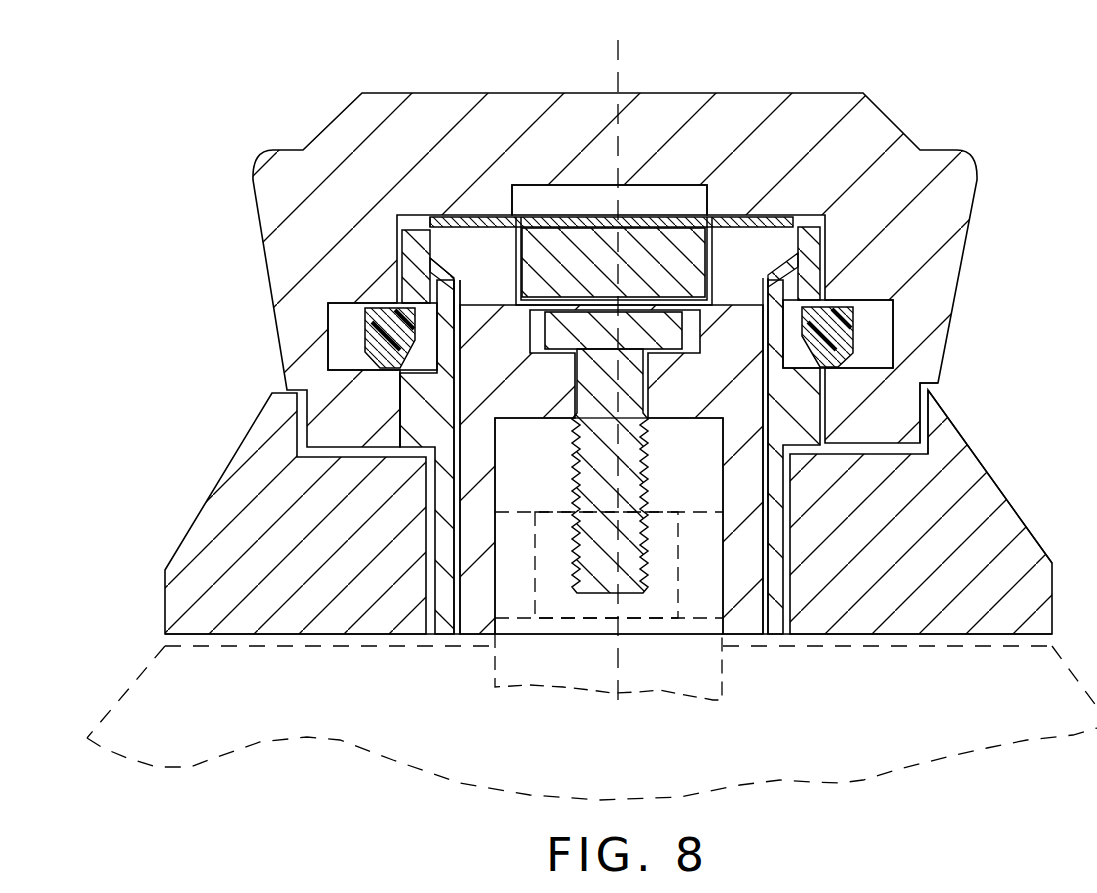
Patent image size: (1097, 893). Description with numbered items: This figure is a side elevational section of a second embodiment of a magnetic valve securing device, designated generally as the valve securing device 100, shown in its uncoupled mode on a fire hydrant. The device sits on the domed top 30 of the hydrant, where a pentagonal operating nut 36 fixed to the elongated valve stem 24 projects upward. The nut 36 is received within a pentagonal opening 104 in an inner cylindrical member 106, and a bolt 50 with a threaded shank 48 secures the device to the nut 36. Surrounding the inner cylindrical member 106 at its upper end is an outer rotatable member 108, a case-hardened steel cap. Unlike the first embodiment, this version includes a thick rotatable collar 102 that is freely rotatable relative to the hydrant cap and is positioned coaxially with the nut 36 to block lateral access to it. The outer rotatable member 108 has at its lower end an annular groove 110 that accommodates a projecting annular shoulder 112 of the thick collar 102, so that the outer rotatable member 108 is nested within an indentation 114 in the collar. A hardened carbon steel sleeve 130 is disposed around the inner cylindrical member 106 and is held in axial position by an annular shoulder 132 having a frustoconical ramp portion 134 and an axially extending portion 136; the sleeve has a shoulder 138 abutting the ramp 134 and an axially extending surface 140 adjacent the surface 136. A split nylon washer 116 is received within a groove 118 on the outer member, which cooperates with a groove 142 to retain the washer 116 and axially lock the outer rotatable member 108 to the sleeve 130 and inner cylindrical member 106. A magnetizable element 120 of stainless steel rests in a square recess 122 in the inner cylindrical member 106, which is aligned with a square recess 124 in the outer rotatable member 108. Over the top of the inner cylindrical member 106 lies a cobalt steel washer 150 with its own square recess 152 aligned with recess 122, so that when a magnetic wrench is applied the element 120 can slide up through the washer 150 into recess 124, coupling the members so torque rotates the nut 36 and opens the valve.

The valve securing device 100 is at (757, 82).
The thick rotatable collar 102 is at (987, 497).
The pentagonal opening 104 is at (712, 483).
The inner cylindrical member 106 is at (545, 405).
The outer rotatable member 108 is at (272, 198).
The annular groove 110 is at (930, 400).
The projecting annular shoulder 112 is at (957, 433).
The indentation 114 is at (938, 388).
The split nylon washer 116 is at (372, 345).
The groove 118 is at (337, 313).
The magnetizable element 120 is at (583, 240).
The square recess 122 is at (725, 225).
The square recess 124 is at (672, 195).
The hardened carbon steel sleeve 130 is at (440, 640).
The annular shoulder 132 is at (437, 217).
The frustoconical ramp portion 134 is at (447, 267).
The axially extending portion 136 is at (418, 232).
The shoulder 138 is at (457, 283).
The axially extending surface 140 is at (440, 240).
The groove 142 is at (400, 375).
The cobalt steel washer 150 is at (470, 217).
The square recess 152 is at (633, 217).
The valve stem 24 is at (707, 677).
The domed top 30 is at (263, 723).
The pentagonal operating nut 36 is at (697, 594).
The threaded shank 48 is at (578, 490).
The bolt 50 is at (632, 362).